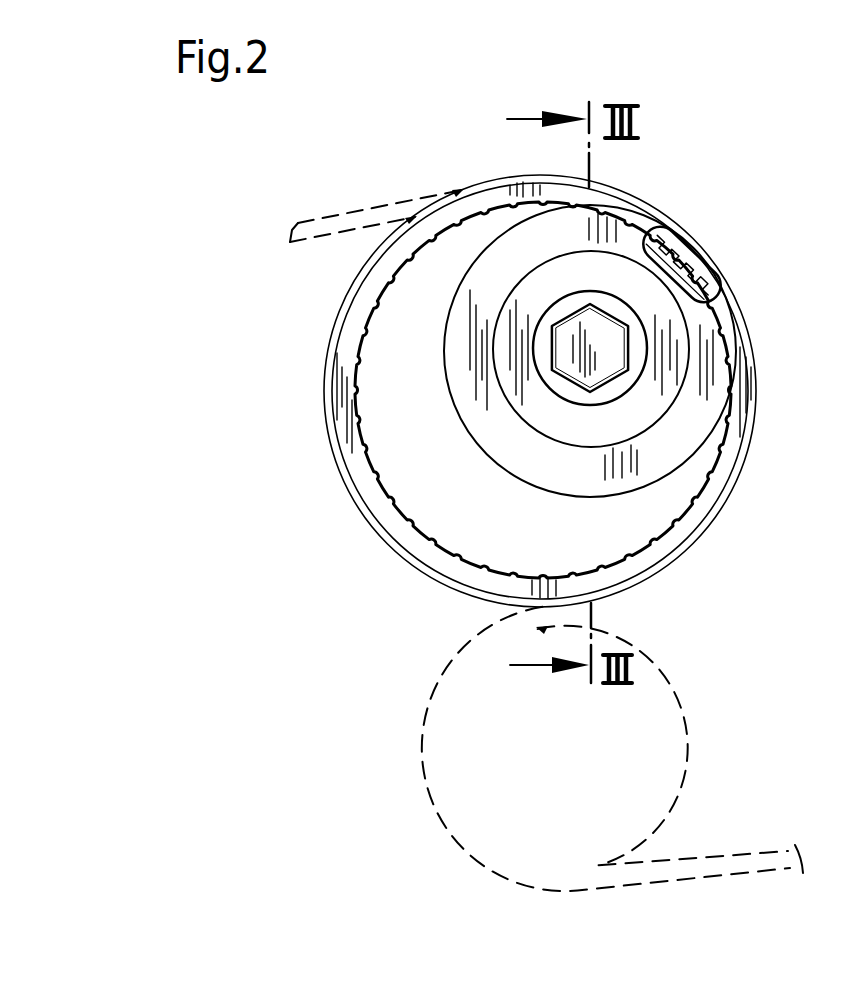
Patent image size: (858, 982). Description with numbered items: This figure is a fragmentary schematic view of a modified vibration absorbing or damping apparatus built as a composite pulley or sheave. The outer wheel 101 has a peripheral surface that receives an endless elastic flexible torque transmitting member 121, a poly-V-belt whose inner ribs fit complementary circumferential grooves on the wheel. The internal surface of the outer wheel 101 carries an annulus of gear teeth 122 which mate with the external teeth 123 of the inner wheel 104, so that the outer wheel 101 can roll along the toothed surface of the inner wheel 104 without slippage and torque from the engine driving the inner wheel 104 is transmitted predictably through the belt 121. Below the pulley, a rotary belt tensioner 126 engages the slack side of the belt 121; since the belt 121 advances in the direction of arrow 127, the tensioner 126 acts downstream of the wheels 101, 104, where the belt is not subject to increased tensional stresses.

The outer wheel 101 is at (707, 510).
The inner wheel 104 is at (465, 324).
The endless elastic flexible torque transmitting member 121 is at (334, 223).
The gear teeth 122 is at (382, 488).
The external teeth 123 is at (675, 252).
The rotary belt tensioner 126 is at (507, 835).
The arrow 127 is at (266, 236).